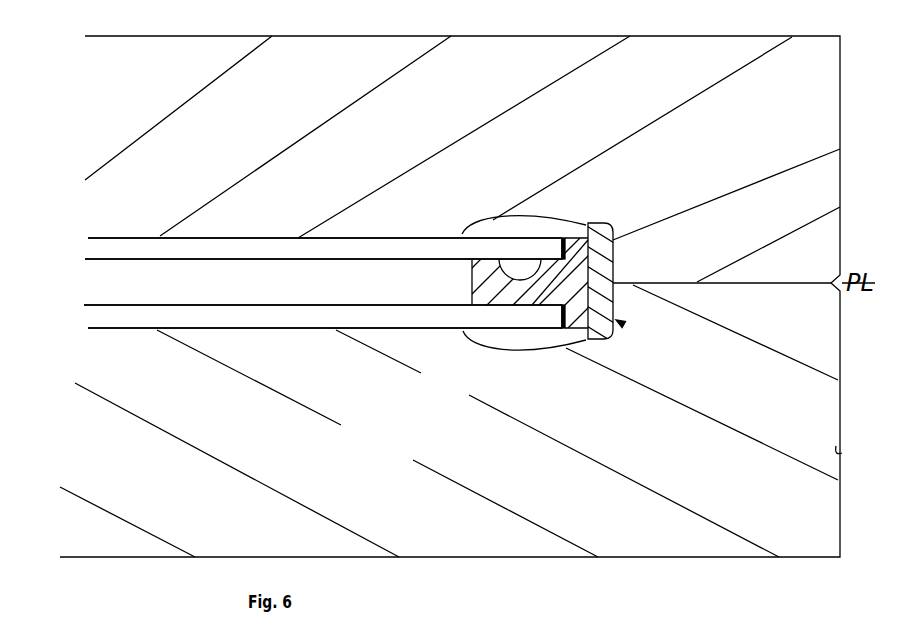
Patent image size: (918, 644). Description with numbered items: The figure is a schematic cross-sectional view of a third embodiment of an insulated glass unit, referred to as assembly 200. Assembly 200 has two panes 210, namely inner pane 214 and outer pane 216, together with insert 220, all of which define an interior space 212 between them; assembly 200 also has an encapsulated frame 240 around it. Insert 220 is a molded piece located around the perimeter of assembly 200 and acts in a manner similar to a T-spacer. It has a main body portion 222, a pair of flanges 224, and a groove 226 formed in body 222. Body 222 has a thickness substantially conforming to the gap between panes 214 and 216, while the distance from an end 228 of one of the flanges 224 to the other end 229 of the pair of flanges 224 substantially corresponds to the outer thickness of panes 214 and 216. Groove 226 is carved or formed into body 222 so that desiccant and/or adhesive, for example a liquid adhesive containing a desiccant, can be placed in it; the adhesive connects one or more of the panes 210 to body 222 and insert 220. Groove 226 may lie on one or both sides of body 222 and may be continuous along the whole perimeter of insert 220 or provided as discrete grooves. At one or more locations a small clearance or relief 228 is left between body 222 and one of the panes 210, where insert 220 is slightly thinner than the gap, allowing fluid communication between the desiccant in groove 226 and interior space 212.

The assembly 200 is at (272, 182).
The panes 210 is at (97, 237).
The interior space 212 is at (87, 278).
The inner pane 214 is at (222, 246).
The outer pane 216 is at (228, 322).
The insert 220 is at (578, 293).
The main body portion 222 is at (506, 297).
The flanges 224 is at (607, 222).
The groove 226 is at (520, 270).
The end of flange 228 is at (473, 262).
The other end of flange 229 is at (575, 222).
The encapsulated frame 240 is at (622, 324).